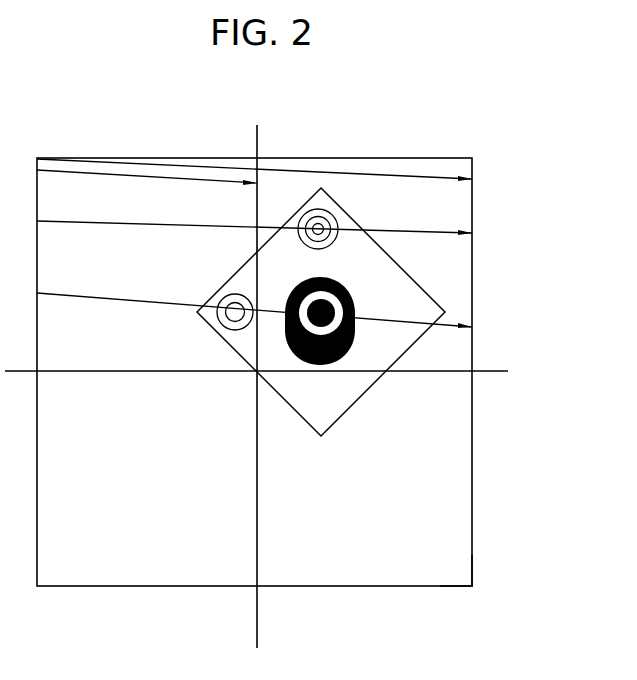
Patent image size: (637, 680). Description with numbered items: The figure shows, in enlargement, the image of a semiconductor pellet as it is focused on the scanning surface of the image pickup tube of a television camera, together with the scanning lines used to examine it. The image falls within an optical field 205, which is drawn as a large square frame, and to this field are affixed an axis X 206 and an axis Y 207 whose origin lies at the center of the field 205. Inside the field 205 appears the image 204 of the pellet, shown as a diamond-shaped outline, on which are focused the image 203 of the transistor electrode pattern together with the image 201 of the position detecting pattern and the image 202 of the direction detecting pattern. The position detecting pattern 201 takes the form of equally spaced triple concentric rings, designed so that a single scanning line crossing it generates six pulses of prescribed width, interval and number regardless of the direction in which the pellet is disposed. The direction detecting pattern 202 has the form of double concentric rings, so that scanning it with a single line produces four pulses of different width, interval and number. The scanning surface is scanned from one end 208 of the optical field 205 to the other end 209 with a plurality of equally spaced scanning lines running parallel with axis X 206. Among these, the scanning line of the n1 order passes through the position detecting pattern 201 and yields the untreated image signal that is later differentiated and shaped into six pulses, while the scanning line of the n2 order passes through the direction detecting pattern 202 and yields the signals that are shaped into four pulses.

The position detecting pattern 201 is at (336, 212).
The direction detecting pattern 202 is at (222, 332).
The image of the electrode pattern 203 is at (302, 358).
The image of the pellet 204 is at (368, 388).
The optical field 205 is at (156, 587).
The axis X 206 is at (491, 373).
The axis Y 207 is at (260, 143).
The one end of the optical field 208 is at (40, 157).
The other end of the optical field 209 is at (471, 588).
The scanning line of the n1 order n1 is at (472, 233).
The scanning line of the n2 order n2 is at (472, 326).